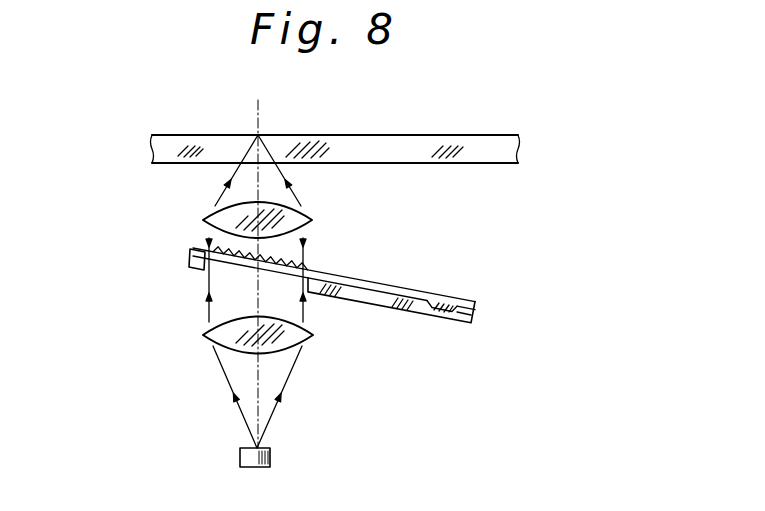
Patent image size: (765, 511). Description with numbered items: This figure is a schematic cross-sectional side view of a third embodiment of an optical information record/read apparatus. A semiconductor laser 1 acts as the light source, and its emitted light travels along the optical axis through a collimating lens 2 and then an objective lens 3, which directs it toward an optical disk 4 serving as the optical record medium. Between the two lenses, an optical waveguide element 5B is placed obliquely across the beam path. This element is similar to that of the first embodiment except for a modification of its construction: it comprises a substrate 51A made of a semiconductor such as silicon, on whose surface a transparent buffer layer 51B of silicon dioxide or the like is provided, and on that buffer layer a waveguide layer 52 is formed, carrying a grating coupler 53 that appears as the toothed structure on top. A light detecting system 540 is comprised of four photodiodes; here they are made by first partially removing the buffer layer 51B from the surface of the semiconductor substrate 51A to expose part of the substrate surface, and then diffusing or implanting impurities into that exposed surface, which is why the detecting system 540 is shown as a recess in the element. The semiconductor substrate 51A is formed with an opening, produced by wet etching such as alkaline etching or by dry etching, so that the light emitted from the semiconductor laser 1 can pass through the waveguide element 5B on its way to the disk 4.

The semiconductor laser 1 is at (270, 458).
The collimating lens 2 is at (313, 336).
The objective lens 3 is at (313, 219).
The optical disk 4 is at (444, 142).
The optical waveguide element 5B is at (341, 291).
The substrate 51A is at (385, 307).
The transparent buffer layer 51B is at (190, 257).
The waveguide layer 52 is at (390, 284).
The grating coupler 53 is at (306, 265).
The light detecting system 540 is at (442, 302).